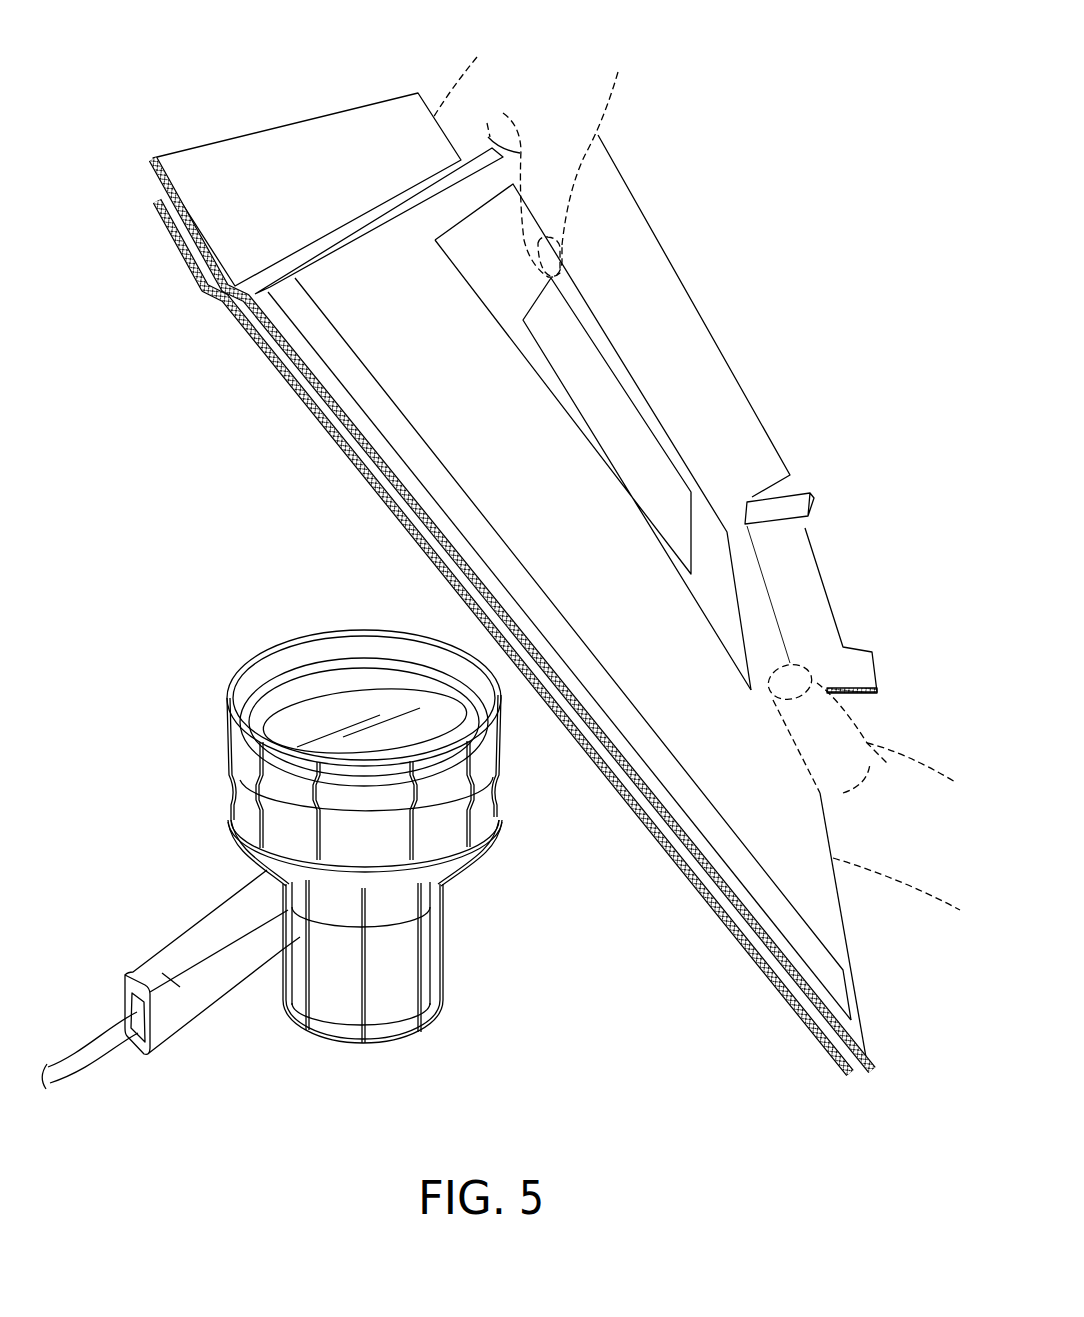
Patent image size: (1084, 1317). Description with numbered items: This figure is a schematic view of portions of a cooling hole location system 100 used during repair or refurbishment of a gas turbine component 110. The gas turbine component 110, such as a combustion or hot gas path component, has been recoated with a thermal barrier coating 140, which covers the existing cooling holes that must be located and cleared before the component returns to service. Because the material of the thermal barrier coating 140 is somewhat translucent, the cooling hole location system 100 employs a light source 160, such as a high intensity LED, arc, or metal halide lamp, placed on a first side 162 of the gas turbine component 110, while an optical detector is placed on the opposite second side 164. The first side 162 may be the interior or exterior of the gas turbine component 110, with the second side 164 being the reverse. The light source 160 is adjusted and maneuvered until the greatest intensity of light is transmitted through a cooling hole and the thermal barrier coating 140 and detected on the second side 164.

The cooling hole location system 100 is at (197, 83).
The gas turbine component 110 is at (297, 140).
The thermal barrier coating 140 is at (600, 387).
The light source 160 is at (418, 890).
The first side 162 is at (752, 958).
The second side 164 is at (812, 932).